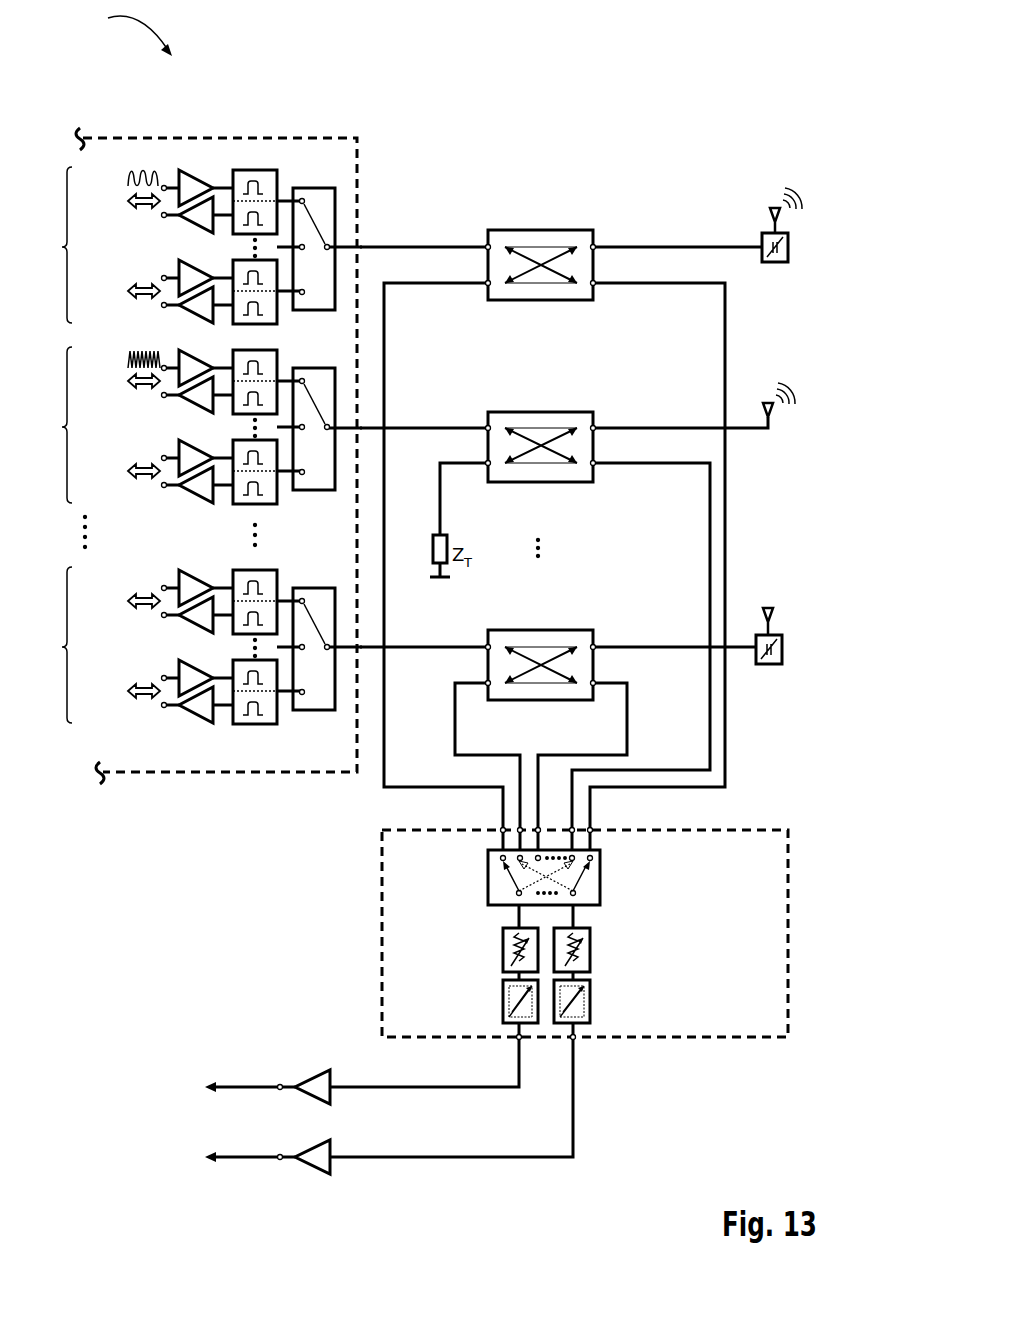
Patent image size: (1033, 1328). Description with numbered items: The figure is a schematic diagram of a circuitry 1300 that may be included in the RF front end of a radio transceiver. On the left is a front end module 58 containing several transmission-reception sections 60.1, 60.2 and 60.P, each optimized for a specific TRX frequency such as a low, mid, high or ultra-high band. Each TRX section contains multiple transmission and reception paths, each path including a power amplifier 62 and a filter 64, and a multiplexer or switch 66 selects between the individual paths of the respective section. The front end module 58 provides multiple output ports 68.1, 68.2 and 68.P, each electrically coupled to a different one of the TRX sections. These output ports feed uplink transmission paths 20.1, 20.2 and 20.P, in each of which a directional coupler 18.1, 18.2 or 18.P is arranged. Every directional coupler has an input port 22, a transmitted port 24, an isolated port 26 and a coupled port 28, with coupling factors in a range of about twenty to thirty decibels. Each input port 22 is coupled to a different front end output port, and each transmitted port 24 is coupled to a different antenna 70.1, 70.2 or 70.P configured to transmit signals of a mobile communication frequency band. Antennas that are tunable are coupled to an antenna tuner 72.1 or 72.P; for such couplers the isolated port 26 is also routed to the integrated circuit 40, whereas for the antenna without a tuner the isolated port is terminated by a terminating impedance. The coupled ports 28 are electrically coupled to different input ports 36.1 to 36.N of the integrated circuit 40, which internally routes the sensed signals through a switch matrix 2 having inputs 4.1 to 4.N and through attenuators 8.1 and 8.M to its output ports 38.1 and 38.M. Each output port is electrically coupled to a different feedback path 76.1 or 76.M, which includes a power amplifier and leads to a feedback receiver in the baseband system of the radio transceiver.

The circuitry 1300 is at (111, 32).
The front end module 58 is at (186, 772).
The transmission-reception (TRX) section 60.1 is at (156, 245).
The transmission-reception (TRX) section 60.2 is at (172, 425).
The transmission-reception (TRX) section 60.P is at (172, 645).
The power amplifier 62 is at (207, 185).
The filter 64 is at (277, 180).
The multiplexer or switch 66 is at (335, 189).
The output port 68.1 is at (357, 247).
The output port 68.2 is at (357, 428).
The output port 68.P is at (357, 647).
The uplink transmission path 20.1 is at (443, 247).
The uplink transmission path 20.2 is at (450, 428).
The uplink transmission path 20.P is at (450, 647).
The directional coupler 18.1 is at (567, 230).
The directional coupler 18.2 is at (585, 412).
The directional coupler 18.P is at (570, 630).
The input port 22 is at (490, 247).
The transmitted port 24 is at (596, 247).
The isolated port 26 is at (487, 286).
The coupled port 28 is at (597, 286).
The antenna 70.1 is at (775, 208).
The antenna 70.2 is at (768, 403).
The antenna 70.P is at (768, 608).
The antenna tuner 72.1 is at (790, 247).
The antenna tuner 72.P is at (784, 647).
The input port 36.1 is at (503, 830).
The input port 36.N is at (590, 830).
The first switch matrix input 4.1 is at (488, 858).
The N-th switch matrix input 4.N is at (600, 855).
The switch matrix 2 is at (602, 890).
The first variable attenuator 8.1 is at (503, 940).
The M-th variable attenuator 8.M is at (592, 943).
The output port 38.1 is at (517, 1037).
The output port 38.M is at (577, 1040).
The integrated circuit 40 is at (792, 928).
The feedback path 76.1 is at (333, 1078).
The feedback path 76.M is at (335, 1162).